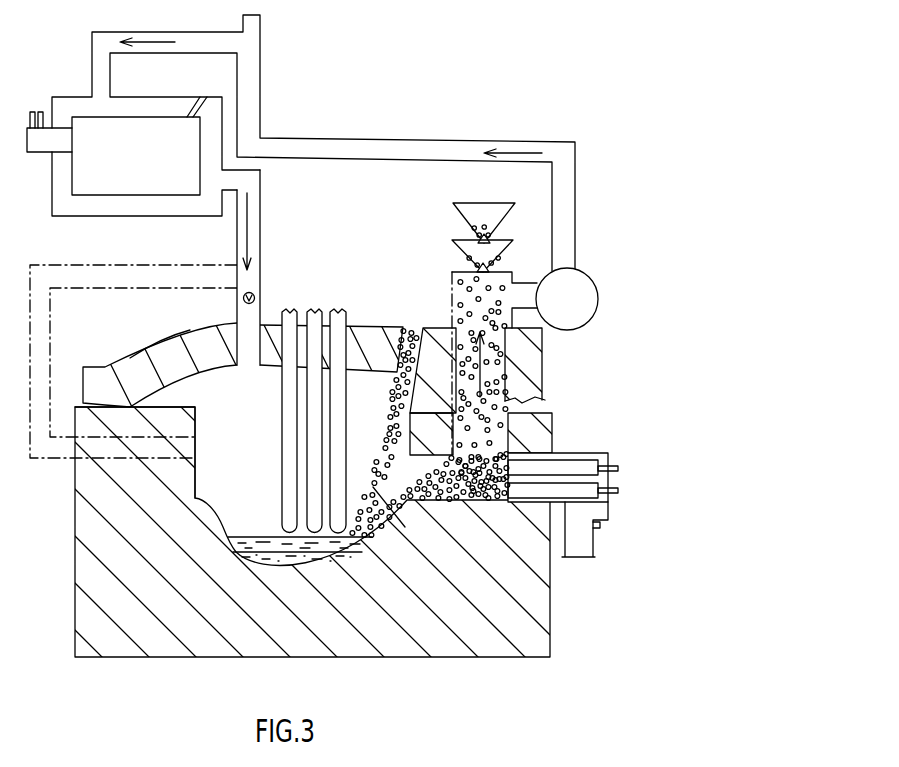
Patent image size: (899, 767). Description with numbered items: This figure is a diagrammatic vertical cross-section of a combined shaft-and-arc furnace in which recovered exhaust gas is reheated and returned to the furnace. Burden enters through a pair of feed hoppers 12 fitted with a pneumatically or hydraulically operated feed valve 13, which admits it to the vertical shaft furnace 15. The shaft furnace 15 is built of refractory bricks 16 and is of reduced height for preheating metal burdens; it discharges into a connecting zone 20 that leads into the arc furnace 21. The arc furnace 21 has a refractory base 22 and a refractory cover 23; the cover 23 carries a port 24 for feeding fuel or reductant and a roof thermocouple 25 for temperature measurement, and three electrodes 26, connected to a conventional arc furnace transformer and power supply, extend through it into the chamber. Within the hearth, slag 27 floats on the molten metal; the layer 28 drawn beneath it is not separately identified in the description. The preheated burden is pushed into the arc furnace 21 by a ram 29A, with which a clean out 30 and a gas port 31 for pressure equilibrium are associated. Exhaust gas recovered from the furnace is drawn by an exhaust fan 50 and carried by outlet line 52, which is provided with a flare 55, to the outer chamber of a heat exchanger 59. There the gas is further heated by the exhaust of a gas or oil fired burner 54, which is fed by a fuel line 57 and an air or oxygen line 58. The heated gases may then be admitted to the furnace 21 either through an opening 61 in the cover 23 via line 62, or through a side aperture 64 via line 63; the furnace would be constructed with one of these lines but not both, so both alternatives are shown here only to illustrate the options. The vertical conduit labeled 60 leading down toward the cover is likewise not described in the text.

The feed hopper 12 is at (504, 226).
The feed valve 13 is at (478, 269).
The vertical shaft furnace 15 is at (541, 400).
The refractory bricks 16 is at (541, 377).
The connecting zone 20 is at (433, 456).
The arc furnace 21 is at (372, 486).
The refractory base 22 is at (356, 652).
The refractory cover 23 is at (200, 373).
The port 24 is at (412, 330).
The roof thermocouple 25 is at (160, 350).
The electrodes 26 is at (338, 313).
The slag 27 is at (248, 538).
The molten metal layer 28 is at (269, 556).
The ram 29A is at (556, 453).
The clean out 30 is at (580, 562).
The gas port 31 is at (598, 528).
The exhaust fan 50 is at (580, 326).
The outlet line 52 is at (462, 146).
The gas or oil fired burner 54 is at (36, 154).
The flare 55 is at (261, 20).
The fuel line 57 is at (33, 111).
The air or oxygen line 58 is at (42, 111).
The heat exchanger 59 is at (163, 123).
The heated gas conduit 60 is at (262, 182).
The opening 61 is at (257, 349).
The line 62 is at (256, 298).
The line 63 is at (172, 262).
The side aperture 64 is at (188, 443).